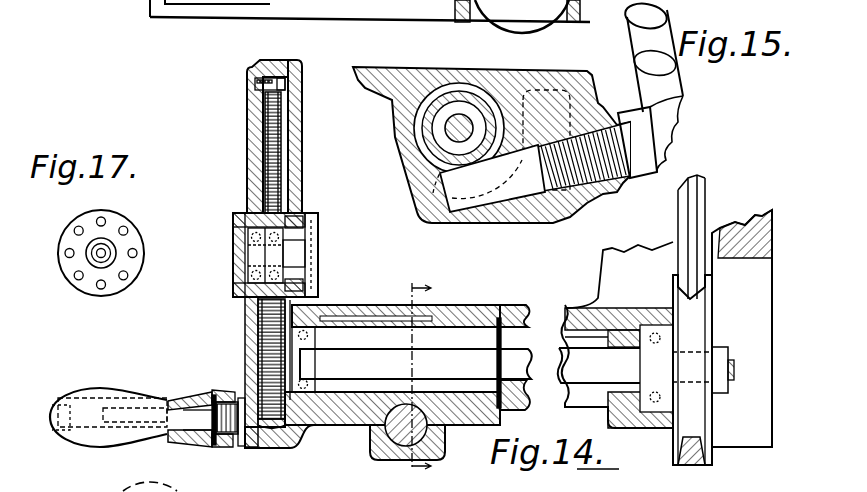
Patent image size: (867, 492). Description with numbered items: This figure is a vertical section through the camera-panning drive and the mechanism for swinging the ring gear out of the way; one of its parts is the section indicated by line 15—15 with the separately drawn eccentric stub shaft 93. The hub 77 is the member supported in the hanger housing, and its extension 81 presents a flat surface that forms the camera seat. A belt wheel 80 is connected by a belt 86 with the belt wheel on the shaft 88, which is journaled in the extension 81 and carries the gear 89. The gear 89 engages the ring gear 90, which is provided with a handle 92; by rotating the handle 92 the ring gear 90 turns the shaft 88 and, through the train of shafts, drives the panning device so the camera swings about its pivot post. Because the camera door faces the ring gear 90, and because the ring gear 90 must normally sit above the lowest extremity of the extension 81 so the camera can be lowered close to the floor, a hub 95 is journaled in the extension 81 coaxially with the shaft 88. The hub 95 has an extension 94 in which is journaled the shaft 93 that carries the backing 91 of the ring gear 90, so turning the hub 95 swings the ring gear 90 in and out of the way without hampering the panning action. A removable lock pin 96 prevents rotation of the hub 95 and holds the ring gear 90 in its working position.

In FIG. 14, the section line 15- 15 is at (415, 380).
In FIG. 14, the hub 77 is at (762, 226).
In FIG. 14, the belt wheel 80 is at (672, 287).
In FIG. 15, the extension 81 is at (373, 67).
In FIG. 14, the extension 81 is at (515, 305).
In FIG. 14, the belt 86 is at (696, 193).
In FIG. 15, the shaft 88 is at (452, 131).
In FIG. 14, the shaft 88 is at (567, 365).
In FIG. 14, the gear 89 is at (262, 336).
In FIG. 14, the ring gear 90 is at (270, 153).
In FIG. 14, the backing 91 is at (246, 100).
In FIG. 14, the handle 92 is at (98, 388).
In FIG. 17, the shaft 93 is at (138, 264).
In FIG. 14, the shaft 93 is at (298, 252).
In FIG. 14, the extension 94 is at (297, 189).
In FIG. 15, the hub 95 is at (425, 114).
In FIG. 14, the hub 95 is at (357, 318).
In FIG. 15, the lock pin 96 is at (510, 193).
In FIG. 14, the lock pin 96 is at (393, 432).